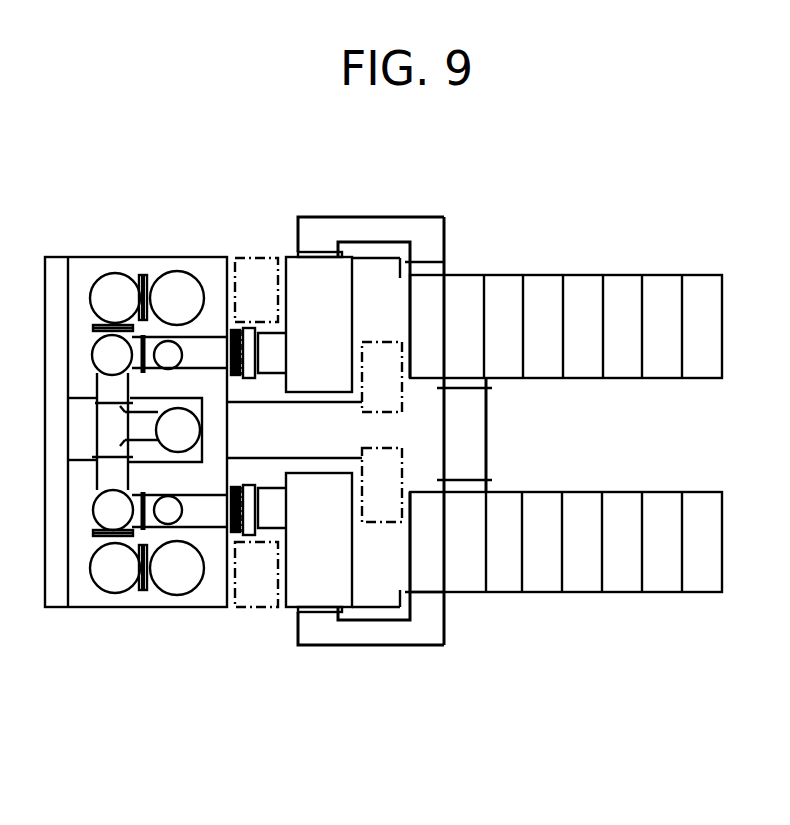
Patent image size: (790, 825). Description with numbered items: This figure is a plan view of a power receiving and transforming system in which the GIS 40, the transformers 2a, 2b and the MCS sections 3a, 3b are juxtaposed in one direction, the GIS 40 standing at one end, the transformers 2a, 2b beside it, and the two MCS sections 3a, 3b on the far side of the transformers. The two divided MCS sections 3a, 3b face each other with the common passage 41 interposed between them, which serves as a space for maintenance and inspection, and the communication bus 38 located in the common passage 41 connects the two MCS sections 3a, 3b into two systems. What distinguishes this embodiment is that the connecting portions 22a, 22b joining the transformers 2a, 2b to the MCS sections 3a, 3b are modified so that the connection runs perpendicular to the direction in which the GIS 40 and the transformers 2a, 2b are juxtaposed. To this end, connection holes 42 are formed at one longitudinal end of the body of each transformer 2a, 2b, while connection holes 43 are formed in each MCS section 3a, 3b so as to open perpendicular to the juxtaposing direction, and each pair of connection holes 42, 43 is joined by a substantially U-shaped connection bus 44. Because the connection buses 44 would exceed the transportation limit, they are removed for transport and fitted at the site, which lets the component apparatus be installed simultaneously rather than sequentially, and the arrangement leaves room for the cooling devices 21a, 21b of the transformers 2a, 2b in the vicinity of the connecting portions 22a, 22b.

The transformer (TR) 2a is at (313, 268).
The transformer (TR) 2b is at (297, 590).
The MCS section 3a is at (673, 249).
The MCS section 3b is at (548, 592).
The cooling device 21a is at (250, 267).
The cooling device 21b is at (250, 597).
The connecting portion 22a is at (382, 215).
The connecting portion 22b is at (385, 645).
The communication bus 38 is at (488, 428).
The GIS (gas-insulated switchgear) 40 is at (105, 592).
The common passage 41 is at (683, 450).
The connection hole 42 is at (298, 252).
The connection hole 43 is at (447, 262).
The connection bus 44 is at (442, 216).